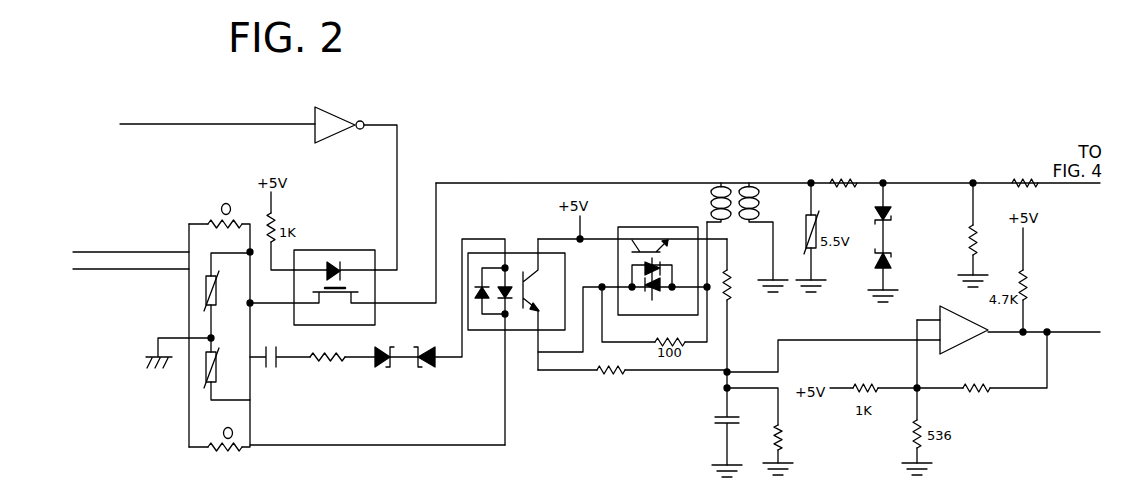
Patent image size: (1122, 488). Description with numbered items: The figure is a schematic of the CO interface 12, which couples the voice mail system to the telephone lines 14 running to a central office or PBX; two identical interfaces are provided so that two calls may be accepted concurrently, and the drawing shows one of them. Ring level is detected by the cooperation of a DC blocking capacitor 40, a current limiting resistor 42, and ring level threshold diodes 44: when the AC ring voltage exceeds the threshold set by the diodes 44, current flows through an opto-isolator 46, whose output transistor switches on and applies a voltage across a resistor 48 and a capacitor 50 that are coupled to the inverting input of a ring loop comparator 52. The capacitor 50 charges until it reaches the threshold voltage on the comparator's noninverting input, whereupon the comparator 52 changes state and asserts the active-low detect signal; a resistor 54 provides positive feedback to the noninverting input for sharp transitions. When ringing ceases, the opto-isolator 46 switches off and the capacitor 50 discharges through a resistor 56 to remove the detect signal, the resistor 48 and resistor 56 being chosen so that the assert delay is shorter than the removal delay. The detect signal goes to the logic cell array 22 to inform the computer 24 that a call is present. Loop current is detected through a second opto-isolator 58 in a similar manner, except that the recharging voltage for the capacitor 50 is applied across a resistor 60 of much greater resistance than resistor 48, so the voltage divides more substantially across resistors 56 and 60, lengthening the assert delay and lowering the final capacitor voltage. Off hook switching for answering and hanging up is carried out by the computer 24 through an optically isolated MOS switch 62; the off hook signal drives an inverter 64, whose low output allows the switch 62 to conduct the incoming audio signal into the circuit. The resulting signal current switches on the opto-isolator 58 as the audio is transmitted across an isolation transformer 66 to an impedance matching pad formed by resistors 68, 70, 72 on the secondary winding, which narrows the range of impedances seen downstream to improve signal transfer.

The CO interface 12 is at (503, 155).
The telephone lines 14 is at (163, 328).
The logic cell array 22 is at (1044, 302).
The computer 24 is at (189, 104).
The DC blocking capacitor 40 is at (268, 370).
The current limiting resistor 42 is at (328, 365).
The ring level threshold diodes 44 is at (421, 372).
The opto-isolator 46 is at (515, 251).
The resistor 48 is at (612, 381).
The capacitor 50 is at (722, 425).
The ring loop comparator 52 is at (955, 305).
The resistor 54 is at (973, 392).
The resistor 56 is at (787, 437).
The opto-isolator 58 is at (672, 225).
The resistor 60 is at (735, 290).
The optically isolated MOS switch 62 is at (318, 250).
The inverter 64 is at (337, 141).
The isolation transformer 66 is at (730, 183).
The resistor 68 is at (845, 178).
The resistor 70 is at (972, 232).
The resistor 72 is at (1015, 178).